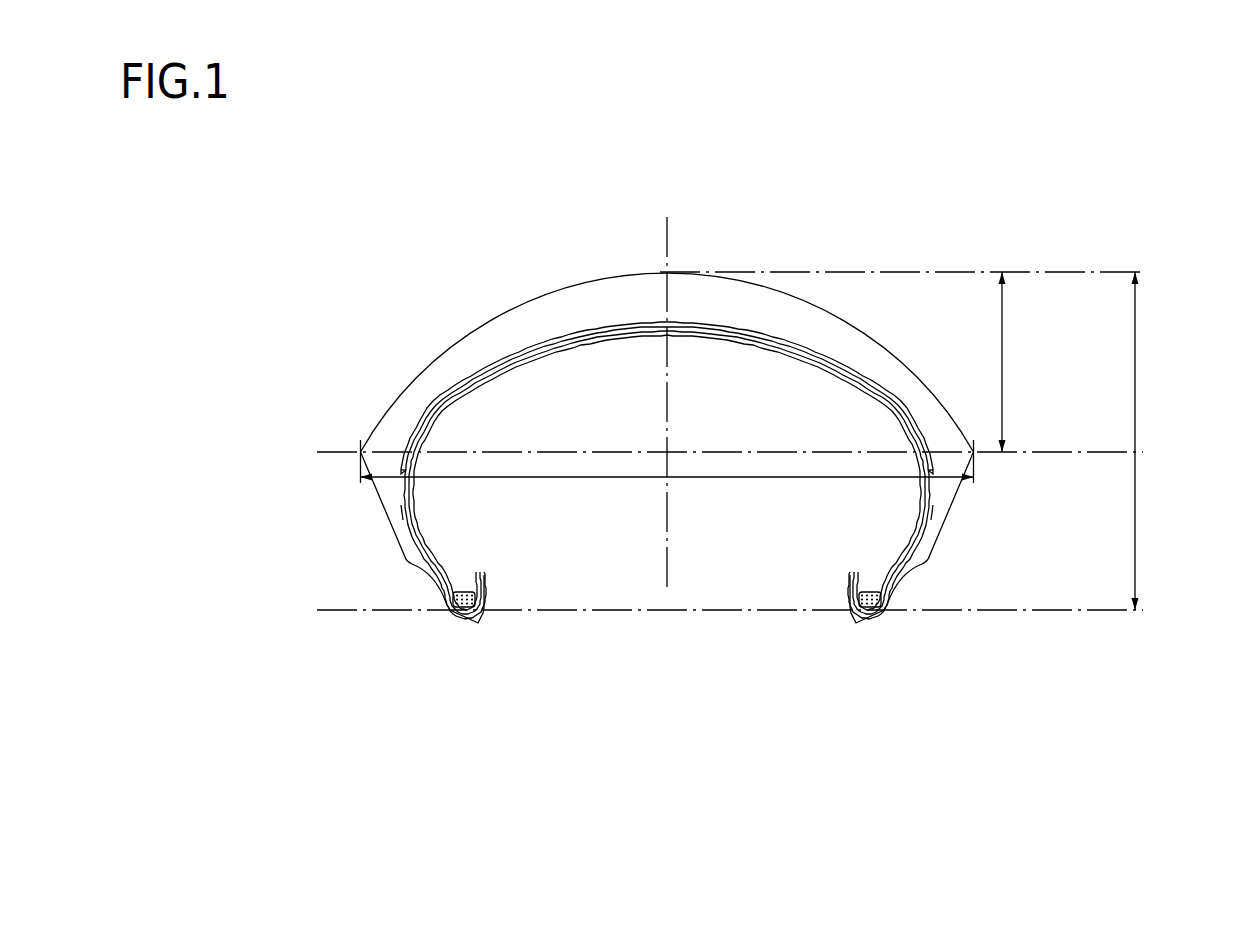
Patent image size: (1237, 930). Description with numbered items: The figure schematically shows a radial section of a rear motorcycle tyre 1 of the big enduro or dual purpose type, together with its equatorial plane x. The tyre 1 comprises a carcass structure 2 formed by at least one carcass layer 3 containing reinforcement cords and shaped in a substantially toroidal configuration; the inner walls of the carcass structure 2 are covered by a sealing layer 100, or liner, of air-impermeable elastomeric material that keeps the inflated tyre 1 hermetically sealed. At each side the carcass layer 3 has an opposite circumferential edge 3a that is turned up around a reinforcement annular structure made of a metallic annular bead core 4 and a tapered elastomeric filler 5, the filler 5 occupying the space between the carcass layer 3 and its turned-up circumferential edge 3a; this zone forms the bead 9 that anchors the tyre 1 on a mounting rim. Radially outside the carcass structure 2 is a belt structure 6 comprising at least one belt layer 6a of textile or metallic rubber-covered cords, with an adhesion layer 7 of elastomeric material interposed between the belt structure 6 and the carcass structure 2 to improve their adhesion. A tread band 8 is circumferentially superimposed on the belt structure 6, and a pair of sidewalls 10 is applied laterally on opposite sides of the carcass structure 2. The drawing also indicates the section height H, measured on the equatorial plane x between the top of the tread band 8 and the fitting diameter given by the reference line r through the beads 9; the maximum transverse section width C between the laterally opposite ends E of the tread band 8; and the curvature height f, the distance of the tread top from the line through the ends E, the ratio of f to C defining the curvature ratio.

The tyre 1 is at (958, 255).
The carcass structure 2 is at (882, 528).
The carcass layer 3 is at (905, 565).
The circumferential edges 3a is at (920, 542).
The metallic annular bead core 4 is at (860, 597).
The tapered elastomeric filler 5 is at (877, 577).
The belt structure 6 is at (840, 365).
The belt layer 6a is at (830, 343).
The adhesion layer 7 is at (762, 333).
The tread band 8 is at (773, 277).
The bead 9 is at (895, 587).
The sidewalls 10 is at (937, 503).
The sealing layer 100 is at (570, 352).
The equatorial plane x is at (670, 245).
The laterally opposite ends E is at (360, 452).
The maximum transverse section width C is at (688, 478).
The curvature height f is at (1003, 387).
The section height H is at (1135, 468).
The reference line r is at (510, 610).